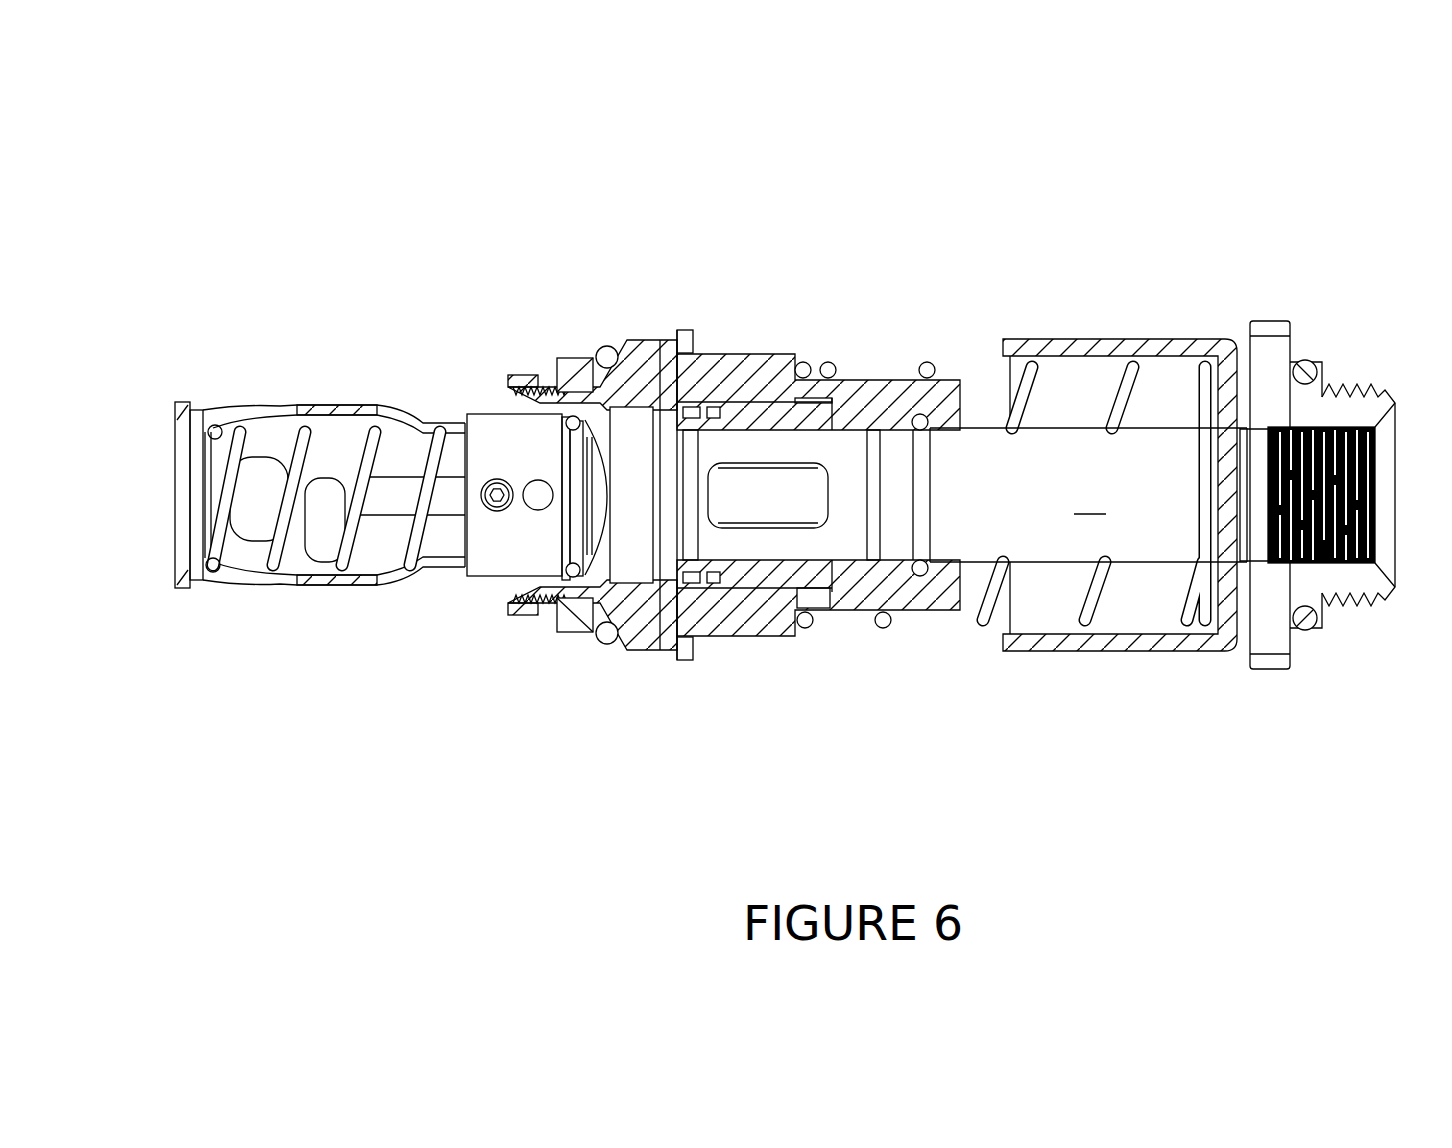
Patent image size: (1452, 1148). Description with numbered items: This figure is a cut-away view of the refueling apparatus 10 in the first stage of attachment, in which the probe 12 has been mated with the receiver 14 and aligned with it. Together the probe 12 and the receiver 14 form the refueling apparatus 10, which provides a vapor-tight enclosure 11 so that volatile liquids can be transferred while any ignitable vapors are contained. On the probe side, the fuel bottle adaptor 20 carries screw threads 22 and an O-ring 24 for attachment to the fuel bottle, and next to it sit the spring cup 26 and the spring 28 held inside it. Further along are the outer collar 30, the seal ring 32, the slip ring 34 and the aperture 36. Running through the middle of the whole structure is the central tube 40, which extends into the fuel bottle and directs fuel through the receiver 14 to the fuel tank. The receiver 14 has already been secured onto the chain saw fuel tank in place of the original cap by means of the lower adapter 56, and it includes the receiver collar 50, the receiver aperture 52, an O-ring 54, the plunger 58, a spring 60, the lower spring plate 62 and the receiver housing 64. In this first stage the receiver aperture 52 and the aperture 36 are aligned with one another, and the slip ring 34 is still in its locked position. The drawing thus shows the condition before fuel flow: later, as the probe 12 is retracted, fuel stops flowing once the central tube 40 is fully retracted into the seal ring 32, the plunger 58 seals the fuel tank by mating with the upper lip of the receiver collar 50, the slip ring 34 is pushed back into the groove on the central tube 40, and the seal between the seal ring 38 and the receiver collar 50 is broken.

The refueling apparatus 10 is at (701, 390).
The vapor-tight enclosure 11 is at (748, 185).
The probe 12 is at (1128, 165).
The receiver 14 is at (420, 245).
The fuel bottle adaptor 20 is at (1273, 375).
The screw threads 22 is at (1370, 405).
The O-ring 24 is at (1296, 362).
The spring cup 26 is at (1163, 338).
The spring 28 is at (1113, 363).
The outer collar 30 is at (912, 390).
The seal ring 32 is at (820, 427).
The slip ring 34 is at (918, 588).
The aperture 36 is at (667, 477).
The seal ring 38 is at (832, 596).
The central tube 40 is at (1080, 495).
The receiver collar 50 is at (636, 362).
The receiver aperture 52 is at (705, 633).
The O-ring 54 is at (611, 362).
The lower adapter 56 is at (522, 378).
The plunger 58 is at (587, 537).
The spring 60 is at (373, 417).
The lower spring plate 62 is at (213, 590).
The receiver housing 64 is at (253, 417).